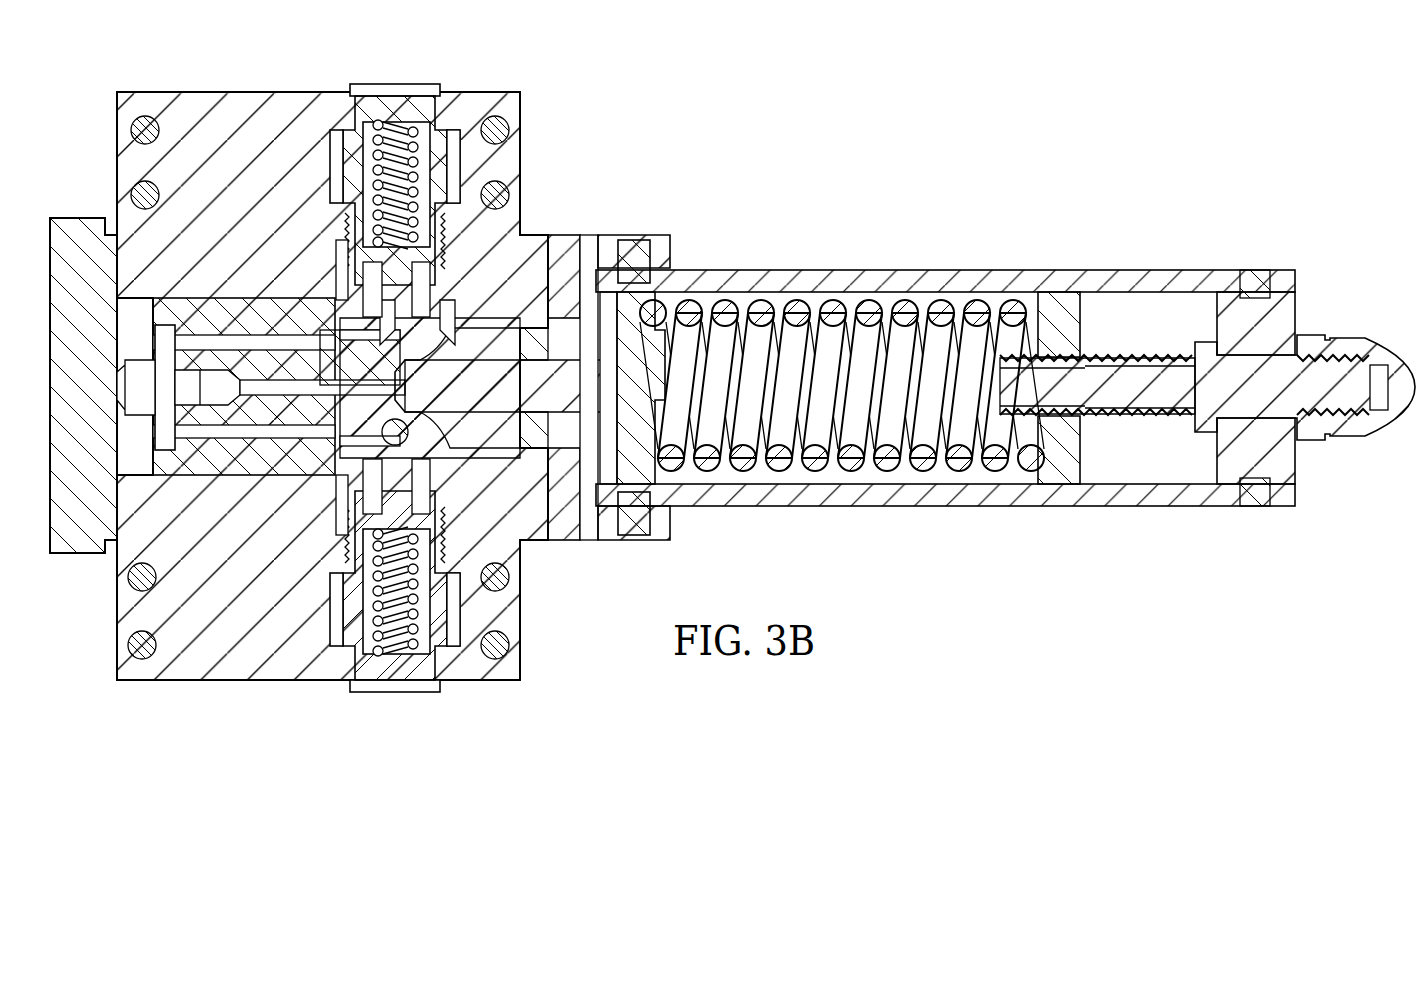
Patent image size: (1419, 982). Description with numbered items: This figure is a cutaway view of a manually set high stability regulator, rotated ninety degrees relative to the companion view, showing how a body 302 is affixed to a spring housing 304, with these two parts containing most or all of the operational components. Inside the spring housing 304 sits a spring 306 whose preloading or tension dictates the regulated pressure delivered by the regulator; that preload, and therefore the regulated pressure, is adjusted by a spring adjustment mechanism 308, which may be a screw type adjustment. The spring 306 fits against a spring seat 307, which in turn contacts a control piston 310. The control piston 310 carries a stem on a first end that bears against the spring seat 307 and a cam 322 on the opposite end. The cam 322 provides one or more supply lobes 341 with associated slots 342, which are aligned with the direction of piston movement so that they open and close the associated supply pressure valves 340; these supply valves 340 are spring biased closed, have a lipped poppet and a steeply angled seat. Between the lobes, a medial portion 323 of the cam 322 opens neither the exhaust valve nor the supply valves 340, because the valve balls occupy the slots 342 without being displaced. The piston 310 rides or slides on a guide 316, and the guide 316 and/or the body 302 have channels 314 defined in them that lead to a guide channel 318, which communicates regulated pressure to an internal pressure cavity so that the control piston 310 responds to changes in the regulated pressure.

The body 302 is at (203, 100).
The spring housing 304 is at (925, 275).
The spring 306 is at (800, 298).
The spring seat 307 is at (673, 360).
The spring adjustment mechanism 308 is at (1130, 357).
The control piston 310 is at (482, 430).
The channels 314 is at (203, 335).
The guide 316 is at (262, 335).
The guide channel 318 is at (280, 395).
The cam 322 is at (472, 345).
The medial portion 323 is at (385, 330).
The supply pressure valves 340 is at (392, 92).
The supply lobes 341 is at (450, 300).
The slots 342 is at (340, 300).